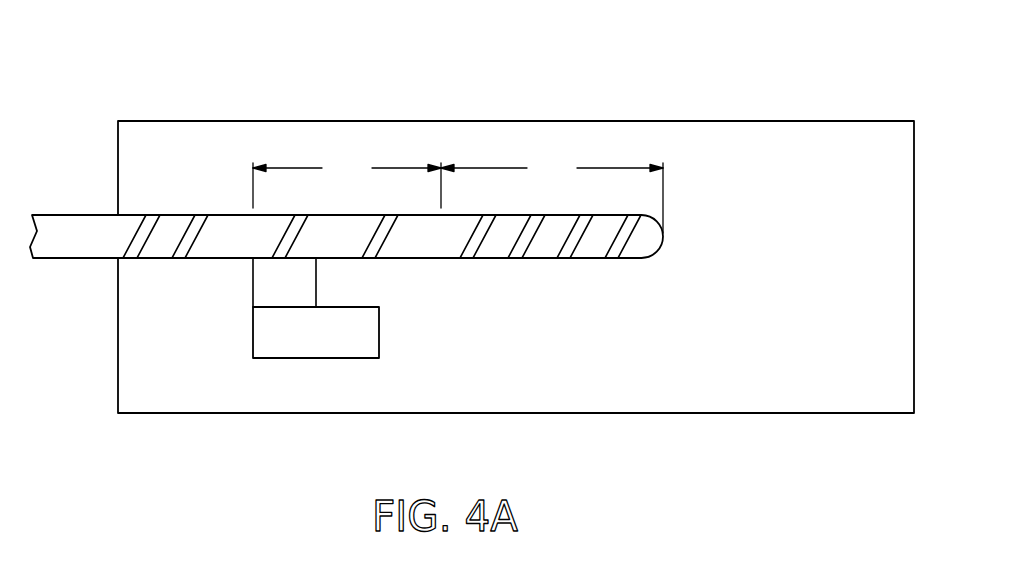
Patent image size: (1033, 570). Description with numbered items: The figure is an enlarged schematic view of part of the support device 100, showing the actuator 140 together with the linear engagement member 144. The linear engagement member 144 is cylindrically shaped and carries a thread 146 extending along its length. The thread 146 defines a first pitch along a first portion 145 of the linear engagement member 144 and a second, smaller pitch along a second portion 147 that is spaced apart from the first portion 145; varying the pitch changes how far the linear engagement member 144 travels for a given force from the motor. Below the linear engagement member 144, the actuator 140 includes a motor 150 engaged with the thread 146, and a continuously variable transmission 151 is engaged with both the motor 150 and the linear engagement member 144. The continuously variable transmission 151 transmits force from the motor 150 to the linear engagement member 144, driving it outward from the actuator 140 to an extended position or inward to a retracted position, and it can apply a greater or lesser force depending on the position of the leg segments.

The support device 100 is at (488, 212).
The actuator 140 is at (645, 111).
The linear engagement member 144 is at (346, 185).
The first portion 145 is at (552, 194).
The thread 146 is at (155, 213).
The second portion 147 is at (347, 182).
The motor 150 is at (379, 335).
The continuously variable transmission 151 is at (252, 287).